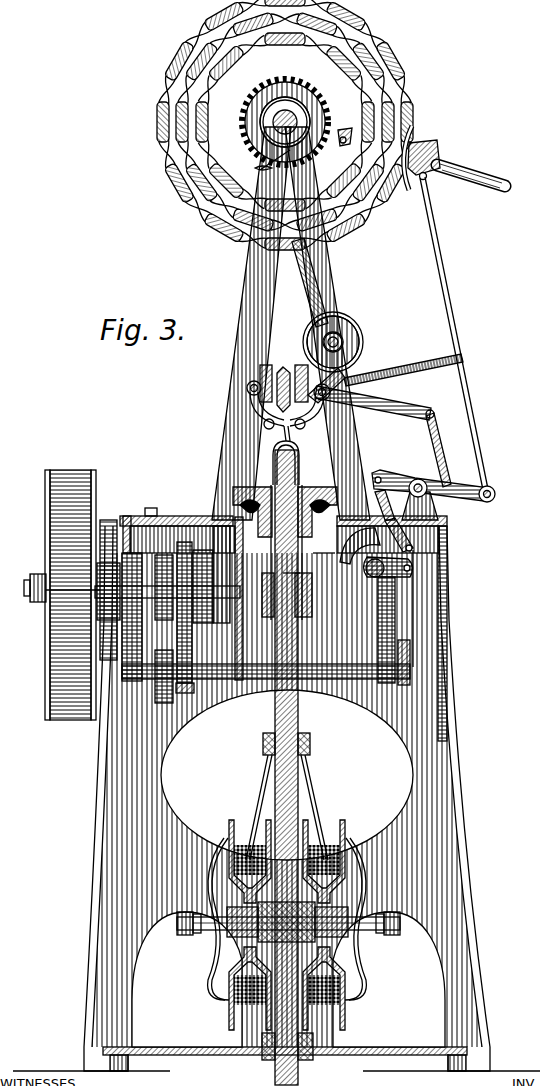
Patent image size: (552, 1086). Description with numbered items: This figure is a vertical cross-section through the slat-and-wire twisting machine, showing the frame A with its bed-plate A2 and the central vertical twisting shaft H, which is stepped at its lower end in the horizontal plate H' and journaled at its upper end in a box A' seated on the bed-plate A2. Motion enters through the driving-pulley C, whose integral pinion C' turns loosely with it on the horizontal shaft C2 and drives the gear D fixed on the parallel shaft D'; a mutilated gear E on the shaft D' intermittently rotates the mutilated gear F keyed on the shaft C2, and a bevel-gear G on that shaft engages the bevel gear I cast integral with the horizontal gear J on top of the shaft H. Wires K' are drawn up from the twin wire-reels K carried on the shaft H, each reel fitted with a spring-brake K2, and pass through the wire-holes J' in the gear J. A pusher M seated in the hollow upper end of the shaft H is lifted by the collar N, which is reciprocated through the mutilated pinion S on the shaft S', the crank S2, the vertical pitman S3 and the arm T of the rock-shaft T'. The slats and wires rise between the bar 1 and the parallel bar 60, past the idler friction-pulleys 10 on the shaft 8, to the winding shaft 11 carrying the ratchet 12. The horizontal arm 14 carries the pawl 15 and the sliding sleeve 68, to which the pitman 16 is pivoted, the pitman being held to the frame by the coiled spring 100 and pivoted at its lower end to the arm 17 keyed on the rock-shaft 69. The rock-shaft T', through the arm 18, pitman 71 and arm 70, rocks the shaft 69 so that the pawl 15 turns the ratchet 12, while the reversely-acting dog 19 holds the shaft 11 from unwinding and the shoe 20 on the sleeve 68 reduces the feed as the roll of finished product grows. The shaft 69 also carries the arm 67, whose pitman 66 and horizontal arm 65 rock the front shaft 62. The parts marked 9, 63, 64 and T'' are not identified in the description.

The bar 1 is at (288, 382).
The shaft 8 is at (340, 322).
The belt strip 9 is at (310, 303).
The friction-pulleys 10 is at (333, 336).
The intermittingly-rotating removable shaft 11 is at (270, 122).
The ratchet 12 is at (270, 116).
The horizontal arm 14 is at (470, 174).
The pawl 15 is at (345, 128).
The pitman 16 is at (440, 255).
The horizontal arm 17 is at (432, 492).
The arm 18 is at (410, 556).
The reversely-acting dog 19 is at (258, 168).
The shoe 20 is at (413, 130).
The bar 60 is at (280, 388).
The front shaft 62 is at (266, 364).
The curved arms 63 is at (287, 414).
The loops 64 is at (281, 452).
The horizontal arm 65 is at (373, 404).
The vertical pitman 66 is at (440, 448).
The vertically-oscillating arm 67 is at (480, 489).
The sliding sleeve 68 is at (430, 152).
The rock-shaft 69 is at (420, 480).
The arm 70 is at (418, 489).
The pitman 71 is at (382, 505).
The coiled spring 100 is at (415, 368).
The frame A is at (276, 793).
The boxes A' is at (266, 323).
The bed-plate A2 is at (190, 518).
The driving-pulley C is at (70, 595).
The pinion C' is at (89, 590).
The horizontal shaft C2 is at (54, 590).
The gear D is at (136, 581).
The horizontal shaft D' is at (121, 629).
The mutilated gear E is at (186, 686).
The mutilated gear F is at (195, 620).
The bevel-gear G is at (244, 574).
The vertical shaft H is at (277, 767).
The horizontal plate H' is at (304, 1045).
The bevel horizontal gear I is at (250, 486).
The horizontal gear J is at (317, 499).
The wire-holes J' is at (323, 557).
The twin wire-reels K is at (284, 922).
The wires K' is at (286, 807).
The spring-brake K2 is at (186, 934).
The pushers M is at (300, 575).
The collars N is at (306, 593).
The mutilated pinion S is at (167, 653).
The shaft S' is at (266, 679).
The crank S2 is at (410, 672).
The vertical pitman S3 is at (396, 602).
The arm T is at (399, 567).
The rock-shaft T' is at (352, 549).
The cam T'' is at (368, 573).